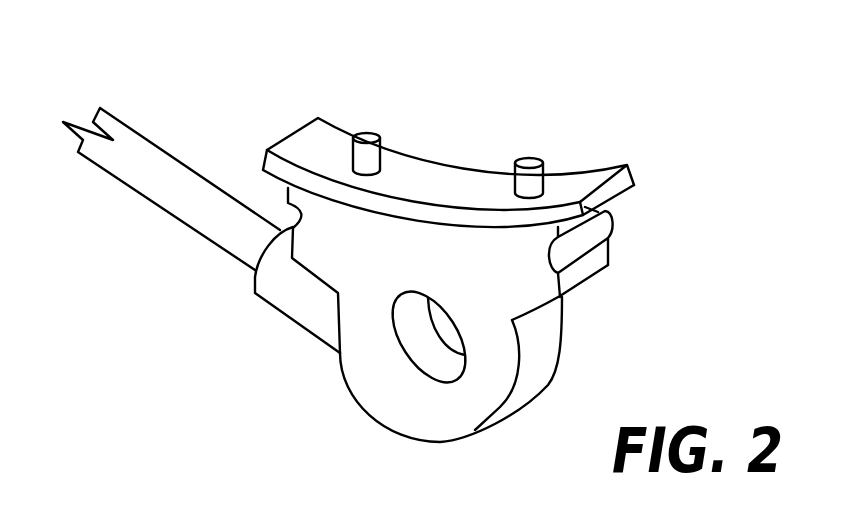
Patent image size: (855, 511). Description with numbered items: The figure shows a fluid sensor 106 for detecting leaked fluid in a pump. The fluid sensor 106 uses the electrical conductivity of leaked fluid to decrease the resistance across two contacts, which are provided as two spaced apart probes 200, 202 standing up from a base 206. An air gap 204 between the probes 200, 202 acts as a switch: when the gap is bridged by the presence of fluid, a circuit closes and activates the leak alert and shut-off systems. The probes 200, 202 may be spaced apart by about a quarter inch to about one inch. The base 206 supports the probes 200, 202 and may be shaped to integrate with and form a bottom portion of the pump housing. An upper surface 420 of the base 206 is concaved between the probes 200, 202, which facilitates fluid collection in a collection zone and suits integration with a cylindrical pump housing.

The fluid sensor 106 is at (618, 63).
The probe 200 is at (539, 158).
The probe 202 is at (379, 135).
The air gap 204 is at (450, 162).
The upper surface 420 is at (490, 162).
The base 206 is at (563, 363).